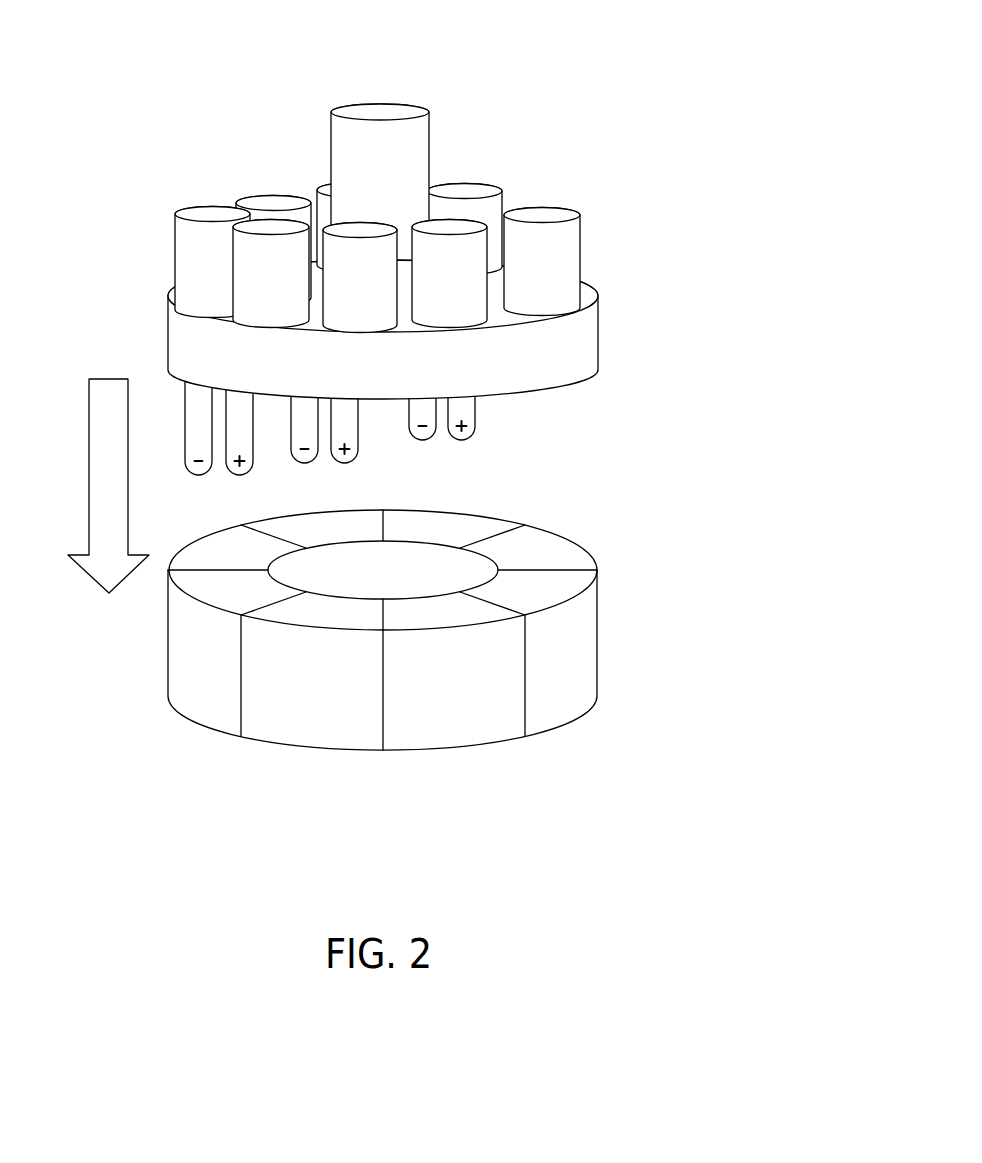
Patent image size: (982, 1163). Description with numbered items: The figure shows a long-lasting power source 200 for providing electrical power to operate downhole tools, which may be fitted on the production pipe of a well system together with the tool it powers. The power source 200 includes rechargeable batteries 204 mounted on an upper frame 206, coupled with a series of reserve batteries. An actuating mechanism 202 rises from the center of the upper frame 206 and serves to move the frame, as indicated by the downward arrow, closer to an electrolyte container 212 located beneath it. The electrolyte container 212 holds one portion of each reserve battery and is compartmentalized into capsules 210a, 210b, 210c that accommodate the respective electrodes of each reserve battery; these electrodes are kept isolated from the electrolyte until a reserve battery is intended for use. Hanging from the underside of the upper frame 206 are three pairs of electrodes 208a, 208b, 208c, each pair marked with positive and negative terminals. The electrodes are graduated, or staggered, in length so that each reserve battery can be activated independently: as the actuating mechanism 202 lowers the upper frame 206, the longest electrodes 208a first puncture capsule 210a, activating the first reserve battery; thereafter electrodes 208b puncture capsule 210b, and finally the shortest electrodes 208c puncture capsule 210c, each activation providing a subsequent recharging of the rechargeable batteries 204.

The power source 200 is at (435, 414).
The actuating mechanism 202 is at (429, 135).
The rechargeable batteries 204 is at (431, 216).
The upper frame 206 is at (577, 338).
The electrodes 208a is at (217, 463).
The electrodes 208b is at (323, 450).
The electrodes 208c is at (442, 428).
The capsule 210a is at (190, 705).
The capsule 210b is at (280, 730).
The capsule 210c is at (457, 732).
The electrolyte container 212 is at (414, 655).